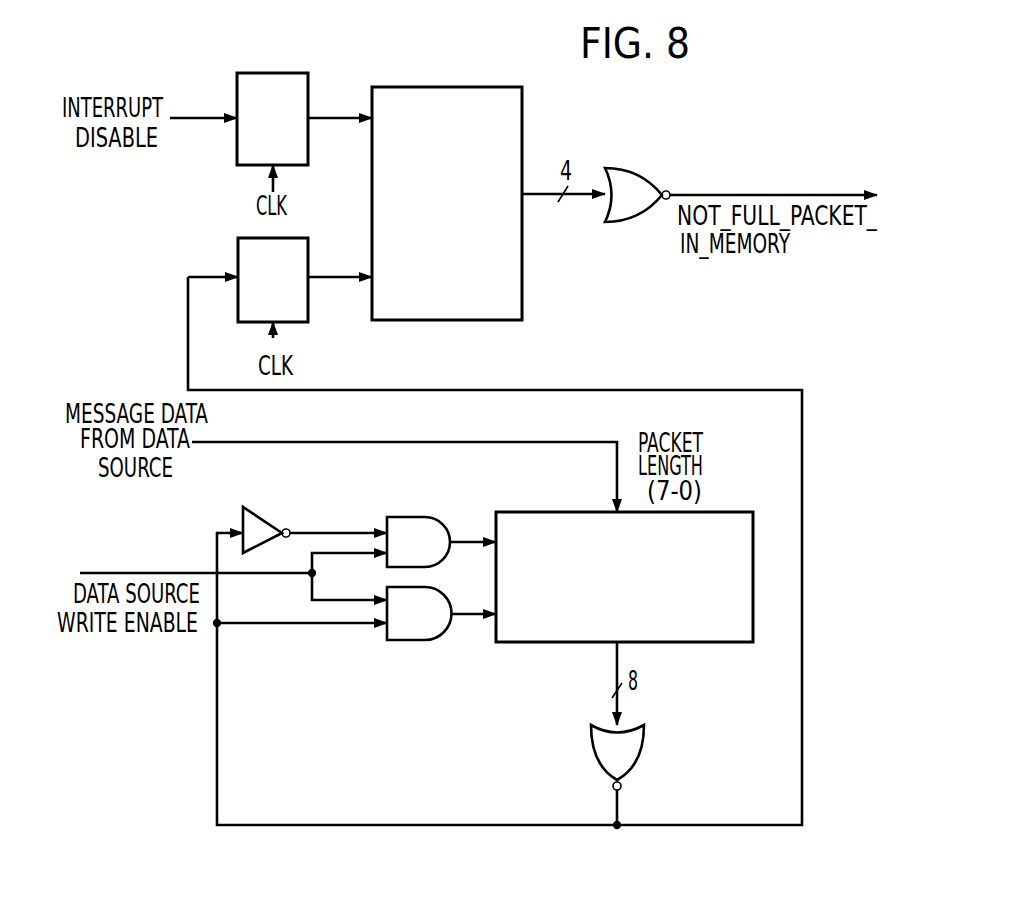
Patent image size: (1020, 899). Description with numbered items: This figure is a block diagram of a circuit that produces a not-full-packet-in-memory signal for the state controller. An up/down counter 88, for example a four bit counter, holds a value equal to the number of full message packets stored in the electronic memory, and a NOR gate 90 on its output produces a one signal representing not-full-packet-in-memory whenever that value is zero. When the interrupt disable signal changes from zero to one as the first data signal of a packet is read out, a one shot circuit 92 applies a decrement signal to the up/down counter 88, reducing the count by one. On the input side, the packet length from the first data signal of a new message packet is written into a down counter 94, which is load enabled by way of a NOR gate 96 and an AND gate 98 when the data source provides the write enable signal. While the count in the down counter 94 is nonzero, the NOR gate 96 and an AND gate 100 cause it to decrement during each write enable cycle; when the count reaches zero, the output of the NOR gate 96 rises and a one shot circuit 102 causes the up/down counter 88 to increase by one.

The up/down counter 88 is at (462, 87).
The NOR gate 90 is at (637, 178).
The one shot circuit 92 is at (277, 73).
The down counter 94 is at (697, 644).
The NOR gate 96 is at (636, 752).
The AND gate 98 is at (416, 634).
The AND gate 100 is at (257, 525).
The one shot circuit 102 is at (300, 305).